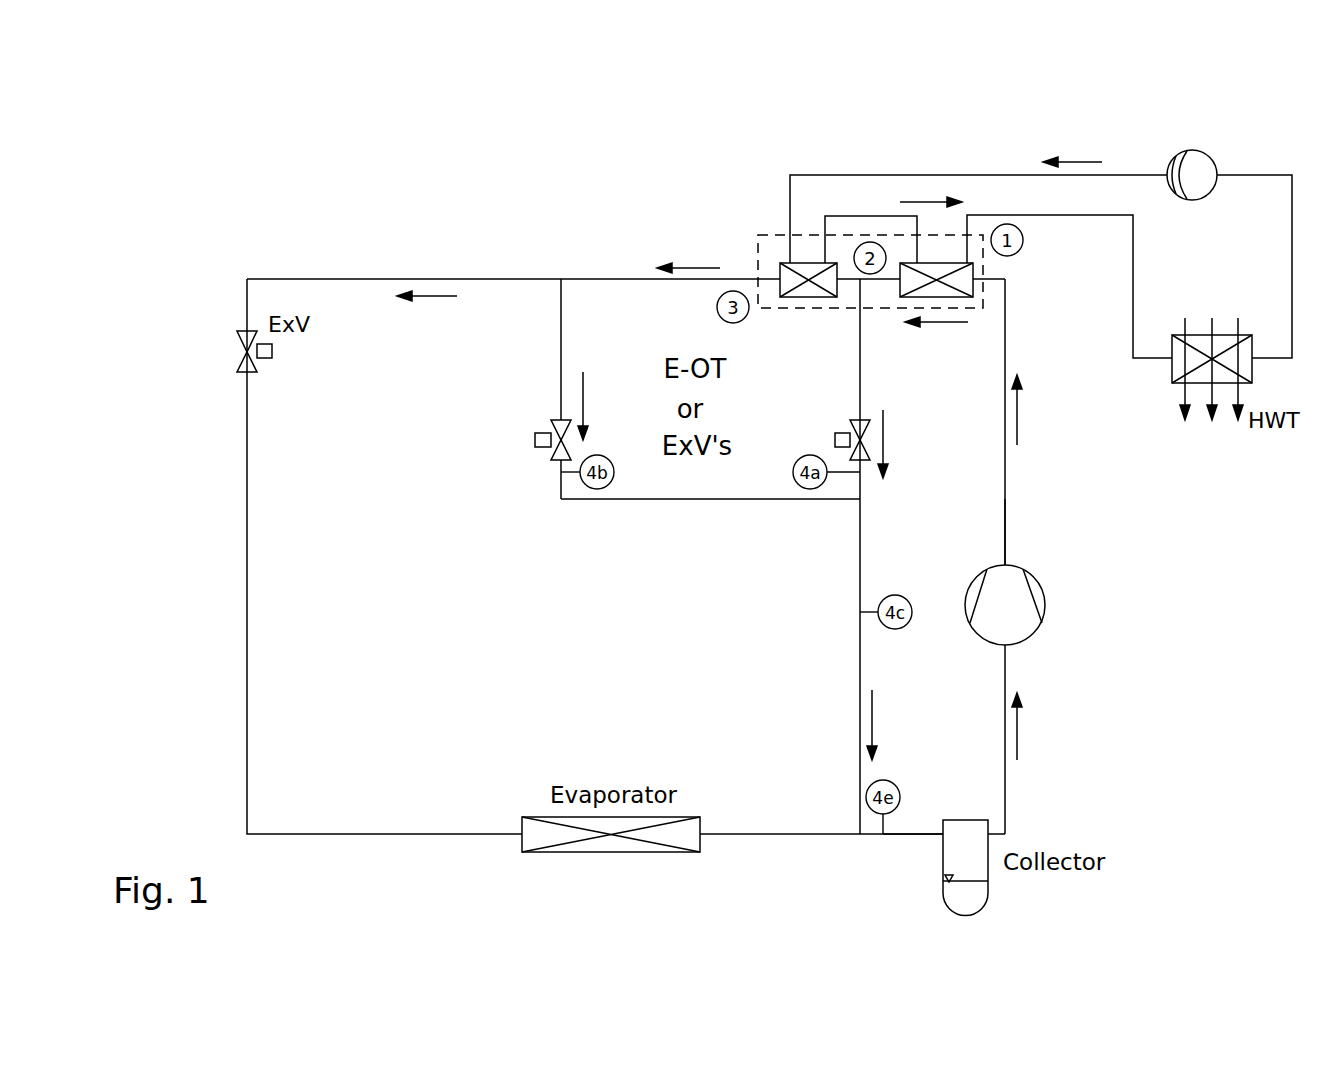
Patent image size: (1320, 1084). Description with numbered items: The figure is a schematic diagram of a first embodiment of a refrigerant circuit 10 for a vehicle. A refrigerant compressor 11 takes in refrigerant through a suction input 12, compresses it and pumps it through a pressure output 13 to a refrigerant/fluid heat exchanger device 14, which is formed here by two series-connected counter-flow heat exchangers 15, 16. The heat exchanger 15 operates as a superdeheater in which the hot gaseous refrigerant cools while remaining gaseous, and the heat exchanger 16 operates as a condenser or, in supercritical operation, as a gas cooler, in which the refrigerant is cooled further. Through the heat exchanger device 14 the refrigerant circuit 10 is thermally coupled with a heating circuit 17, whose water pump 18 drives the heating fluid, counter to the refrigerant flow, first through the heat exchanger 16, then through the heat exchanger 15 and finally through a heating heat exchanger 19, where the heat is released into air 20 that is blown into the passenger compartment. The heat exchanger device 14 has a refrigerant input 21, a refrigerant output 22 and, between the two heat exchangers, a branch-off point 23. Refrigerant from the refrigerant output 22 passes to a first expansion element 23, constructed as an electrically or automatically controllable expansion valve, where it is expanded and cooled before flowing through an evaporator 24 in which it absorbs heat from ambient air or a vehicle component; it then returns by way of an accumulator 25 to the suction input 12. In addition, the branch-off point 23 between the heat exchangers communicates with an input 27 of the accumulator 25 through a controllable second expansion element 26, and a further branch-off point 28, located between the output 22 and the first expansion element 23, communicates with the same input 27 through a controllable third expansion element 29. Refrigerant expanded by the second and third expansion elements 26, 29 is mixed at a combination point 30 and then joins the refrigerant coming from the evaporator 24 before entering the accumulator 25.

The refrigerant circuit 10 is at (470, 250).
The refrigerant compressor 11 is at (1020, 601).
The suction input 12 is at (1005, 675).
The pressure output 13 is at (1005, 530).
The refrigerant/fluid heat exchanger device 14 is at (870, 242).
The heat exchanger 15 is at (945, 298).
The heat exchanger 16 is at (808, 298).
The heating circuit 17 is at (1135, 158).
The water pump 18 is at (1202, 165).
The heating heat exchanger 19 is at (1246, 370).
The air 20 is at (1182, 391).
The refrigerant input 21 is at (1000, 276).
The refrigerant output 22 is at (770, 270).
The branch-off point / first expansion element 23 is at (237, 334).
The evaporator 24 is at (688, 828).
The accumulator 25 is at (950, 855).
The second expansion element 26 is at (850, 425).
The input 27 is at (925, 830).
The branch-off point 28 is at (553, 279).
The third expansion element 29 is at (551, 425).
The combination point 30 is at (860, 499).